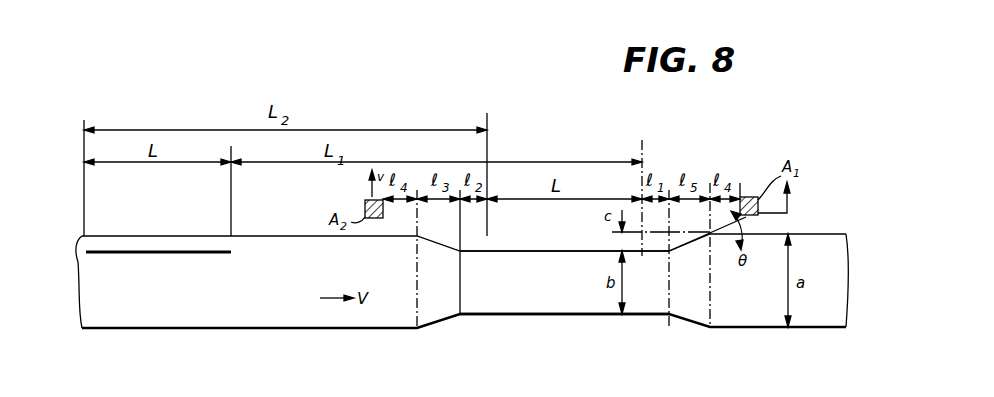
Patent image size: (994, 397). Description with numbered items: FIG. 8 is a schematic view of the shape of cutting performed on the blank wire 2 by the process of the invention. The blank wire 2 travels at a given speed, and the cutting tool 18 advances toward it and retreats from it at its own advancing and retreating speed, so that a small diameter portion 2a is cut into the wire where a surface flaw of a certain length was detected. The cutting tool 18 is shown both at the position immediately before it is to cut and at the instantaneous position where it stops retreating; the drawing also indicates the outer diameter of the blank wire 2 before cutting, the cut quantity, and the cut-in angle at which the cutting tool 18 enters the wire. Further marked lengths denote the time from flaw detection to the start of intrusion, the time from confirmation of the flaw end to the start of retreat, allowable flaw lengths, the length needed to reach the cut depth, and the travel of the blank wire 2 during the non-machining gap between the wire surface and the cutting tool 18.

The blank wire 2 is at (273, 316).
The small diameter portion 2a is at (556, 302).
The cutting tool 18 is at (365, 200).